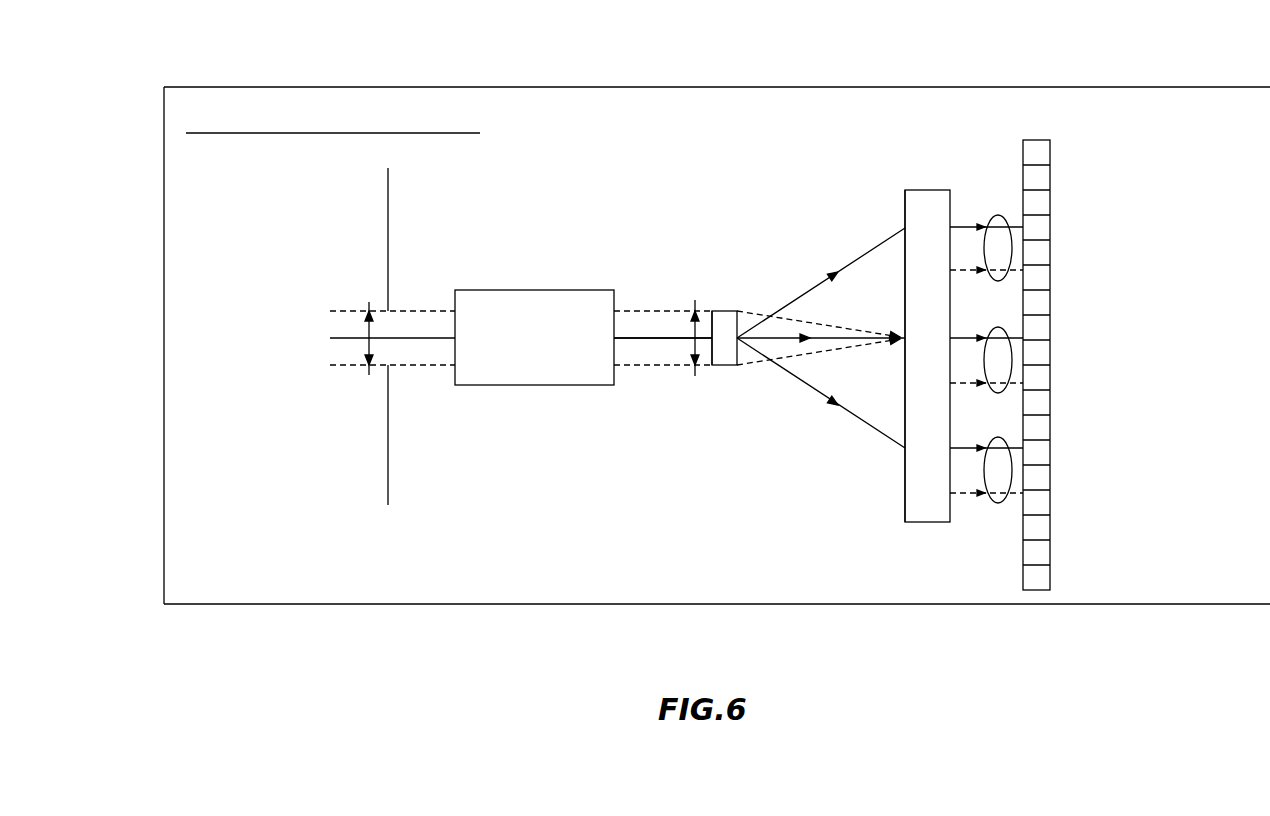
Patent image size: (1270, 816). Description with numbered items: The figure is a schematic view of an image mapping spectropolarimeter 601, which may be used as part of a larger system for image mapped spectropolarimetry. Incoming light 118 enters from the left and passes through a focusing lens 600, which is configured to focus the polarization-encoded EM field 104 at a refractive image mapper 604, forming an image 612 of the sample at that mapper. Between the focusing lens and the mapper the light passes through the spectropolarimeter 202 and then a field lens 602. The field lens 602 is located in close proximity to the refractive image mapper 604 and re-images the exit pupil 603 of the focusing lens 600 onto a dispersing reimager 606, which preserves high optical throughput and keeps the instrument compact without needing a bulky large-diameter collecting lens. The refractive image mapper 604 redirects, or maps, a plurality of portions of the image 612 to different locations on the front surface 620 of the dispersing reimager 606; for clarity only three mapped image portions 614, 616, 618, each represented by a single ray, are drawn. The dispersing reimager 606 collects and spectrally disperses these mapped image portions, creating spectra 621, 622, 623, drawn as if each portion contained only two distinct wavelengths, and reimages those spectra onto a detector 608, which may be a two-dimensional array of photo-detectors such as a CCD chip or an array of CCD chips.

The image mapping spectropolarimeter 601 is at (1084, 85).
The exit pupil 603 is at (389, 218).
The input light beam 118 is at (318, 338).
The focusing lens 600 is at (368, 350).
The spectropolarimeter 202 is at (490, 290).
The polarization-encoded EM field 104 is at (657, 330).
The field lens 602 is at (692, 350).
The refractive image mapper 604 is at (738, 312).
The image 612 is at (710, 368).
The mapped image portion 614 is at (856, 255).
The mapped image portion 616 is at (893, 340).
The mapped image portion 618 is at (860, 425).
The dispersing reimager 606 is at (904, 522).
The front surface 620 is at (903, 190).
The spectrum 621 is at (1003, 216).
The spectrum 622 is at (1000, 328).
The spectrum 623 is at (1003, 440).
The detector 608 is at (1053, 528).